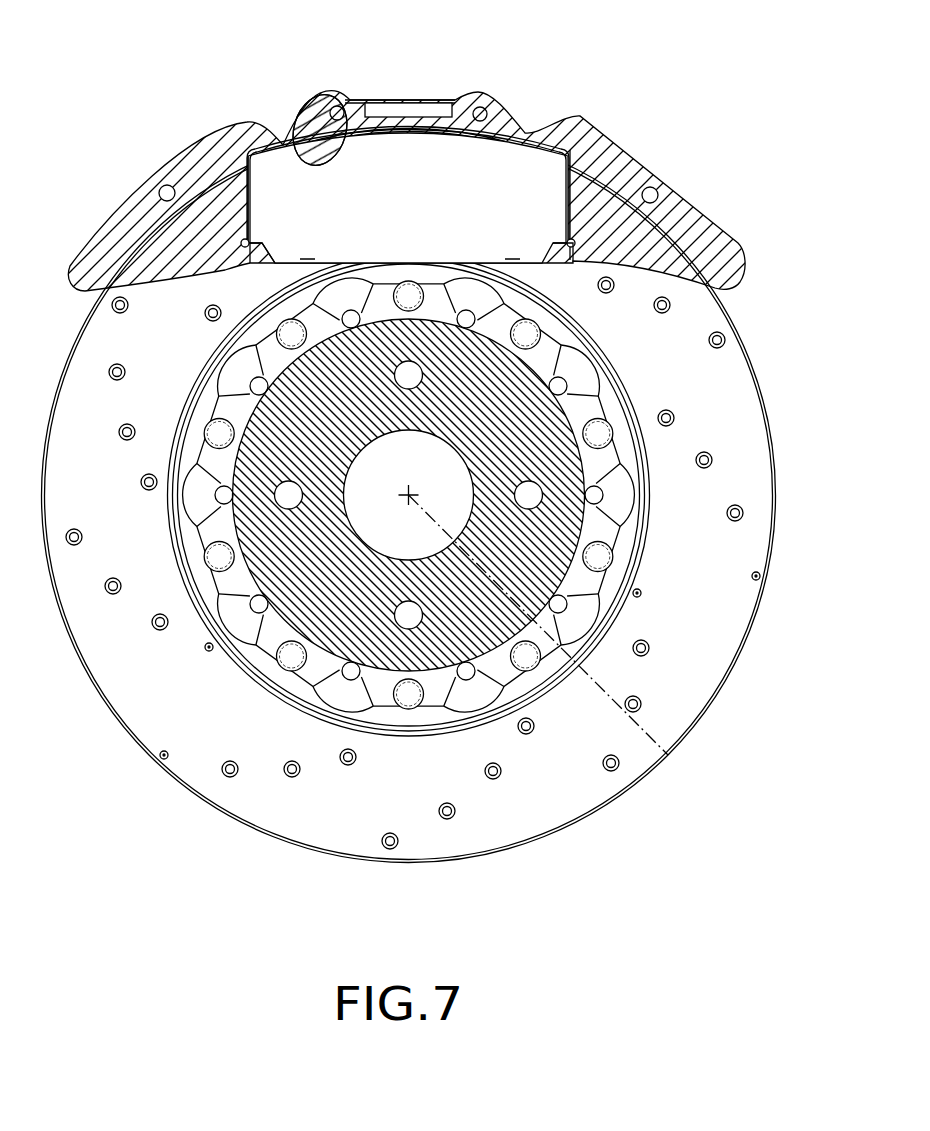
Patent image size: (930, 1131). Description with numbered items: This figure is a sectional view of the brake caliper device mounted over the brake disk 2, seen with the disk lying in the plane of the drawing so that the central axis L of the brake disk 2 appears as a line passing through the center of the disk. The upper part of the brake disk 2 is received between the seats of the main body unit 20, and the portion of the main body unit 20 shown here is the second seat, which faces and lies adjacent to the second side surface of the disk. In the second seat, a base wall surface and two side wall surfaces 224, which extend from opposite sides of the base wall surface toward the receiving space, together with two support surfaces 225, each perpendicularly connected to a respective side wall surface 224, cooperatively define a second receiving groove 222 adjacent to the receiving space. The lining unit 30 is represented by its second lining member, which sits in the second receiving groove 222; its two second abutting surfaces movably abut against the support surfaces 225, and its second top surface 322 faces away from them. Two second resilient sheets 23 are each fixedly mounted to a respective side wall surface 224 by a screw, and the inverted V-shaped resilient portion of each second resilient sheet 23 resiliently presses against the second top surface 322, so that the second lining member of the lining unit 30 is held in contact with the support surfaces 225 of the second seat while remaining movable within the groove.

The brake disk 2 is at (680, 713).
The central axis L is at (680, 765).
The main body unit 20 is at (619, 132).
The second receiving groove 222 is at (573, 183).
The side wall surfaces 224 is at (247, 213).
The support surfaces 225 is at (237, 266).
The second resilient sheets 23 is at (270, 148).
The lining unit 30 is at (412, 151).
The second top surface 322 is at (343, 123).